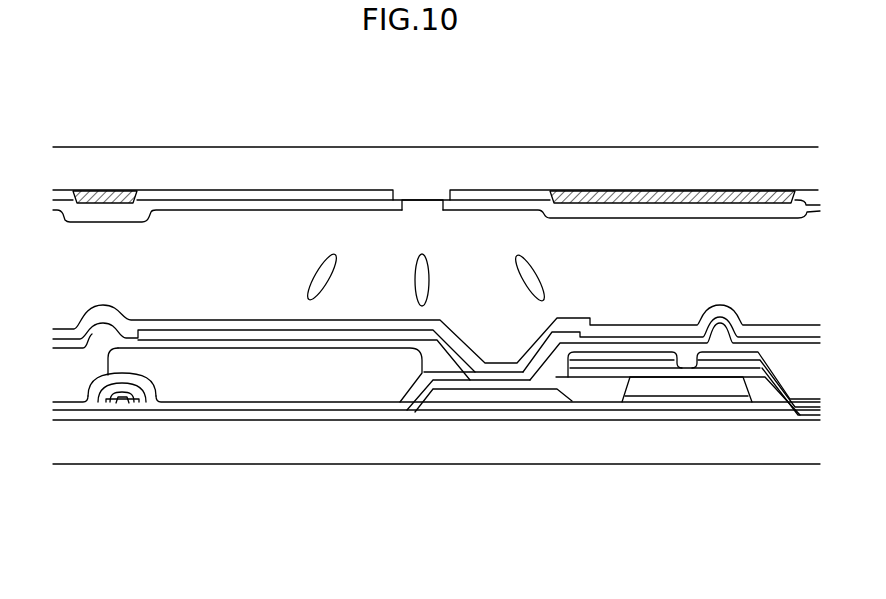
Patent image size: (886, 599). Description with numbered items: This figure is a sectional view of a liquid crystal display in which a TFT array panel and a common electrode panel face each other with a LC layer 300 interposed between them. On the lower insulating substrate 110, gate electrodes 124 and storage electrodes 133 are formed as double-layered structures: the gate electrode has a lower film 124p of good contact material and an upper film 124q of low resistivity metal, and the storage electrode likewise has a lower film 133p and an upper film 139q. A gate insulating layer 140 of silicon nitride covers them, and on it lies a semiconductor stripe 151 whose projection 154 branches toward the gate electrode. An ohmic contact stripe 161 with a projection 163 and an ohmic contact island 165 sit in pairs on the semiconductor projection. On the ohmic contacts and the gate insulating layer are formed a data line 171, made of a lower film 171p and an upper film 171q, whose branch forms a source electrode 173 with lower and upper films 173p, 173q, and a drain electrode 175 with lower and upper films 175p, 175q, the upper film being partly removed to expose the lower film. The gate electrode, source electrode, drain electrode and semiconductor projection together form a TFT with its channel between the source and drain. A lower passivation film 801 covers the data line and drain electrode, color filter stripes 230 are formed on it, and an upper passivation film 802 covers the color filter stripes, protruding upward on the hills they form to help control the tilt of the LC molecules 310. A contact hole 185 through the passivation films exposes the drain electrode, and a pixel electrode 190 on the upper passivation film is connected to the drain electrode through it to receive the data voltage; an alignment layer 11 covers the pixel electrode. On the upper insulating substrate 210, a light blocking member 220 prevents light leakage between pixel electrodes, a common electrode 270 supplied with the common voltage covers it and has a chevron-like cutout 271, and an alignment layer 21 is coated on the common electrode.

The alignment layer 11 is at (822, 331).
The alignment layer 21 is at (822, 205).
The insulating substrate 110 is at (223, 448).
The gate electrode 124 is at (737, 552).
The lower film of gate electrode 124p is at (683, 413).
The upper film of gate electrode 124q is at (735, 387).
The storage electrode 133 is at (470, 512).
The lower film of storage electrode 133p is at (465, 415).
The upper storage electrode layer 139q is at (526, 415).
The gate insulating layer 140 is at (335, 418).
The semiconductor stripe 151 is at (115, 400).
The projection of semiconductor stripe 154 is at (662, 410).
The ohmic contact stripe 161 is at (137, 410).
The projection of ohmic contact stripe 163 is at (760, 408).
The ohmic contact island 165 is at (638, 385).
The data line 171 is at (150, 512).
The lower film of data line 171p is at (101, 405).
The upper film of data line 171q is at (138, 408).
The source electrode 173 is at (703, 274).
The lower film of source electrode 173p is at (722, 372).
The upper film of source electrode 173q is at (760, 368).
The drain electrode 175 is at (603, 292).
The lower film of drain electrode 175p is at (605, 403).
The upper film of drain electrode 175q is at (653, 363).
The contact hole 185 is at (492, 332).
The pixel electrode 190 is at (376, 330).
The insulating substrate 210 is at (281, 176).
The light blocking member 220 is at (100, 195).
The color filter stripe 230 is at (70, 382).
The common electrode 270 is at (494, 197).
The cutout 271 is at (411, 211).
The LC layer 300 is at (88, 268).
The LC molecule 310 is at (313, 280).
The lower passivation film 801 is at (388, 400).
The upper passivation film 802 is at (430, 357).